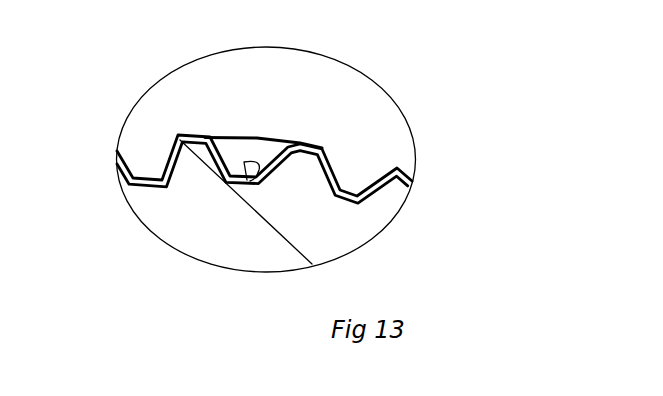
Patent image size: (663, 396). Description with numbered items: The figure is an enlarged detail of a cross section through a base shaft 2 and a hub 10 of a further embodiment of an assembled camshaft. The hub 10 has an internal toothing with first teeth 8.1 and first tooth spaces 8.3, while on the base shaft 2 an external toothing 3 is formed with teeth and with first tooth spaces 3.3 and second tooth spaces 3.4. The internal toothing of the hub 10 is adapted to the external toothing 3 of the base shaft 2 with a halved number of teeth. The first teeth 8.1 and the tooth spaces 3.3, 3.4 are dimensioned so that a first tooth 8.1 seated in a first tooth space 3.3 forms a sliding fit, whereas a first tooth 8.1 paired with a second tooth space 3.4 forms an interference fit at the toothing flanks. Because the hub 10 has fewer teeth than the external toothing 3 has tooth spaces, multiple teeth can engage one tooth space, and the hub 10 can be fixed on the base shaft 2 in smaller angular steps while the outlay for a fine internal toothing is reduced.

The hub 10 is at (182, 90).
The first teeth 8.1 is at (138, 147).
The first tooth spaces 8.3 is at (258, 138).
The base shaft 2 is at (168, 230).
The first tooth spaces 3.3 is at (251, 181).
The second tooth spaces 3.4 is at (162, 183).
The external toothing 3 is at (372, 210).